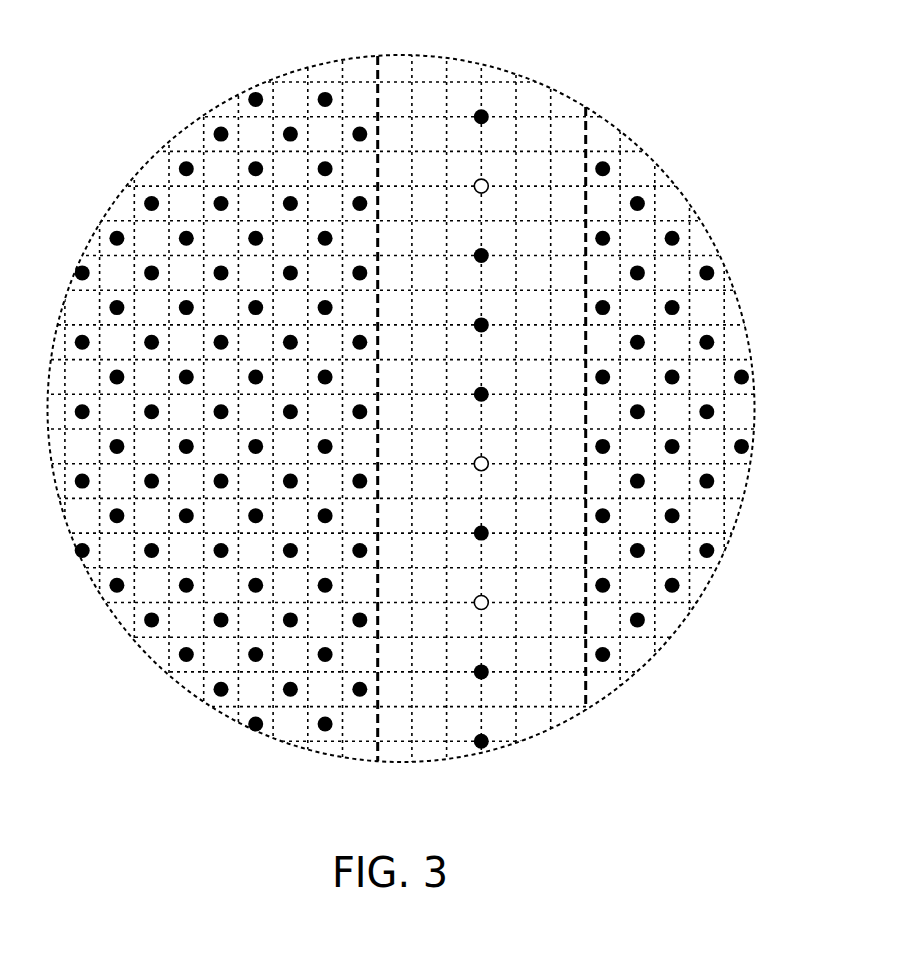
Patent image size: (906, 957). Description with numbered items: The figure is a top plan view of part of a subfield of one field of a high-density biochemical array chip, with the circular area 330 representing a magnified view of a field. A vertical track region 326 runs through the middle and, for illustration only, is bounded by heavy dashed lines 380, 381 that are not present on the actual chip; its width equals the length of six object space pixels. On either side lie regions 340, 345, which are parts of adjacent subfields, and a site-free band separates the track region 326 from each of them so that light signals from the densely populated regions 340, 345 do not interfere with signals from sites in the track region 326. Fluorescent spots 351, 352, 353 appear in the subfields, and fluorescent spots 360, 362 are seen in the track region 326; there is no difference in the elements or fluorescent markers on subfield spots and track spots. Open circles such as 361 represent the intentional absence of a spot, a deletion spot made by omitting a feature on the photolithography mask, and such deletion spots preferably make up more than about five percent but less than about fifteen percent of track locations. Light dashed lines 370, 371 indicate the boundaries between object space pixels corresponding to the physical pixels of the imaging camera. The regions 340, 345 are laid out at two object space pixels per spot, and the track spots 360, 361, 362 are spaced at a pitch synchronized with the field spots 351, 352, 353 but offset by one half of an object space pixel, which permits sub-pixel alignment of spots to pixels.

The track region 326 is at (514, 434).
The circular area 330 is at (607, 123).
The region 340 is at (211, 417).
The region 345 is at (680, 390).
The fluorescent spot 351 is at (213, 130).
The fluorescent spot 352 is at (712, 267).
The fluorescent spot 353 is at (88, 615).
The fluorescent spot 360 is at (482, 672).
The open circle 361 is at (562, 700).
The fluorescent spot 362 is at (487, 112).
The light dashed line 370 is at (705, 502).
The light dashed line 371 is at (400, 411).
The heavy dashed line 380 is at (378, 98).
The heavy dashed line 381 is at (588, 685).